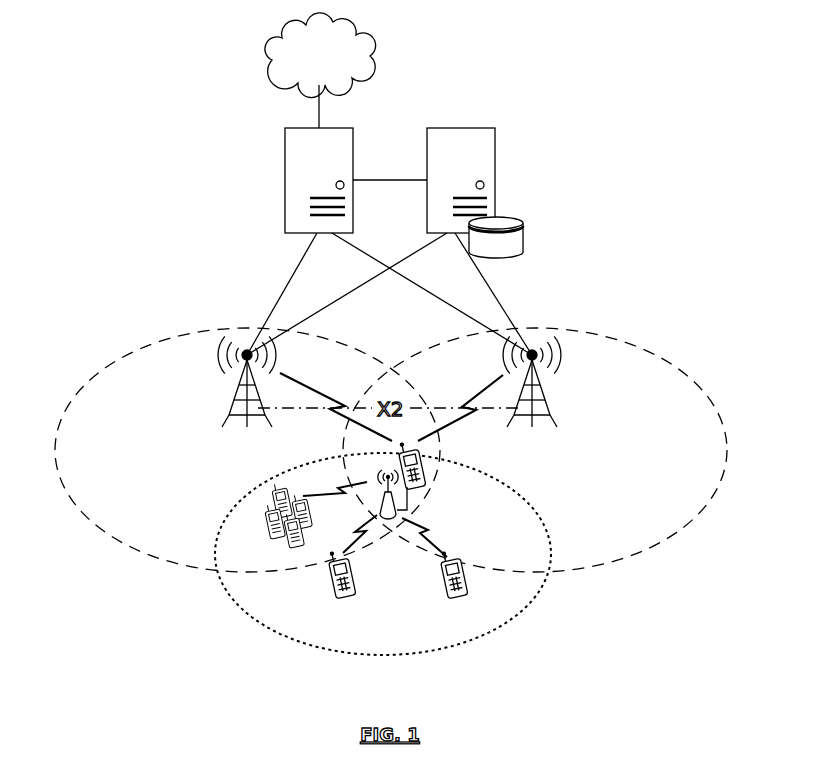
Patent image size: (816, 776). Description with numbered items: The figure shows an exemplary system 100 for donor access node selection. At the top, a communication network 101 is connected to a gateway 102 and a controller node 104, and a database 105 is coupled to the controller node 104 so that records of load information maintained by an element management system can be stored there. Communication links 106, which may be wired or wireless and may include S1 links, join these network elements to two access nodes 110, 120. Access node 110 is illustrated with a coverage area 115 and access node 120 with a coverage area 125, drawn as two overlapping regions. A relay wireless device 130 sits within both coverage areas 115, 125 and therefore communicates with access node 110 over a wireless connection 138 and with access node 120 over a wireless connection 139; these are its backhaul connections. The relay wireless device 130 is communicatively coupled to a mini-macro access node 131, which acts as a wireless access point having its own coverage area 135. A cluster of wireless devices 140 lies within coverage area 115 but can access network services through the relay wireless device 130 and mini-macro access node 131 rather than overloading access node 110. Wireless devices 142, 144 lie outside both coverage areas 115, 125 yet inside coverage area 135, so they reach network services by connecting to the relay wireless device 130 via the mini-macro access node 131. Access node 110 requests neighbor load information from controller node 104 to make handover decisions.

The system 100 is at (470, 65).
The communication network 101 is at (320, 70).
The gateway 102 is at (285, 180).
The controller node 104 is at (495, 180).
The database 105 is at (532, 235).
The communication link 106 is at (340, 278).
The access node 110 is at (233, 407).
The coverage area 115 is at (247, 450).
The access node 120 is at (550, 408).
The coverage area 125 is at (535, 450).
The relay wireless device 130 is at (423, 480).
The mini-macro access node 131 is at (380, 472).
The coverage area 135 is at (415, 554).
The wireless connection 138 is at (336, 402).
The wireless connection 139 is at (453, 402).
The cluster of wireless devices 140 is at (267, 520).
The wireless device 142 is at (315, 583).
The wireless device 144 is at (429, 584).